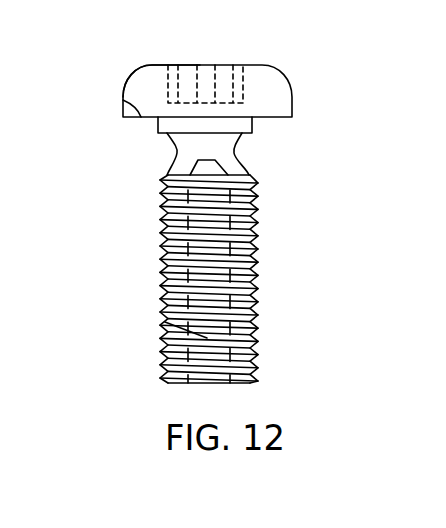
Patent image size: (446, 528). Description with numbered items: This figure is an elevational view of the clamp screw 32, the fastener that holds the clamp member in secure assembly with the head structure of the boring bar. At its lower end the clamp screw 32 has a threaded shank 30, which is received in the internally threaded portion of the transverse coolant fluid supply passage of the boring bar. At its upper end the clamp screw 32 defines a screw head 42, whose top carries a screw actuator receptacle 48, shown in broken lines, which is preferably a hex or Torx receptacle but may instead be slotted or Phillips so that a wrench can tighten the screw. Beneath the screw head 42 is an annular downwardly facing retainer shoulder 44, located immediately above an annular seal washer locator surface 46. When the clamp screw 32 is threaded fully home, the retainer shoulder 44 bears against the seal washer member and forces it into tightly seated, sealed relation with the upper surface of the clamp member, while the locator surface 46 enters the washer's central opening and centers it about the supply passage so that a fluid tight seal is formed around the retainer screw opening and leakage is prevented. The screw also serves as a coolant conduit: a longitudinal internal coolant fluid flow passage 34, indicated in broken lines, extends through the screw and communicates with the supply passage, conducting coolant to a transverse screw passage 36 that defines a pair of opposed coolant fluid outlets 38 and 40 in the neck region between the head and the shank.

The threaded shank 30 is at (163, 267).
The clamp screw 32 is at (282, 73).
The longitudinal internal coolant fluid flow passage 34 is at (163, 322).
The transverse screw passage 36 is at (198, 153).
The coolant fluid outlet 38 is at (168, 174).
The coolant fluid outlet 40 is at (240, 167).
The screw head 42 is at (152, 85).
The annular downwardly facing retainer shoulder 44 is at (122, 100).
The annular seal washer locator surface 46 is at (247, 121).
The screw actuator receptacle 48 is at (205, 77).